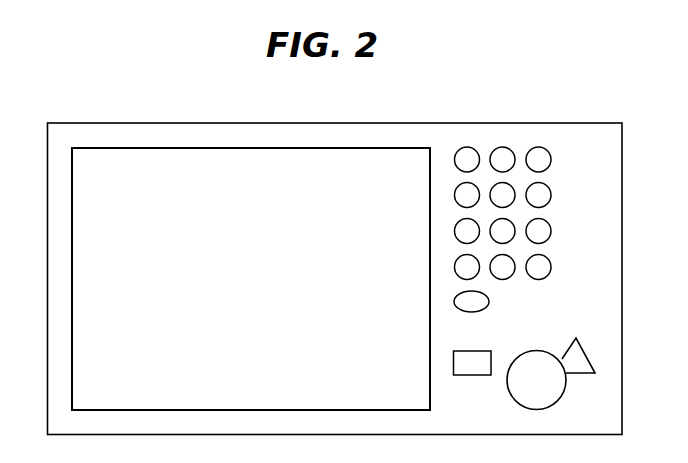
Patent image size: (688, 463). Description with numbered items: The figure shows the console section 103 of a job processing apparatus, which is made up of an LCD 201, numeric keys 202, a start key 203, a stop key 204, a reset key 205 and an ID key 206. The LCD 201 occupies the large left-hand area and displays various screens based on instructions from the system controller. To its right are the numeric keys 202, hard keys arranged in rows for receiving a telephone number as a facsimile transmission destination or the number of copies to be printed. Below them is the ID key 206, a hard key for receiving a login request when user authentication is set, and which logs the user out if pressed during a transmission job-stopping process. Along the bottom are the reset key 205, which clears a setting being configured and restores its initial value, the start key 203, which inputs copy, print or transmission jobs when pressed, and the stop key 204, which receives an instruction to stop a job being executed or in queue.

The console section 103 is at (556, 123).
The LCD 201 is at (163, 148).
The numeric keys 202 is at (461, 147).
The start key 203 is at (530, 351).
The stop key 204 is at (585, 346).
The reset key 205 is at (463, 375).
The ID key 206 is at (490, 303).